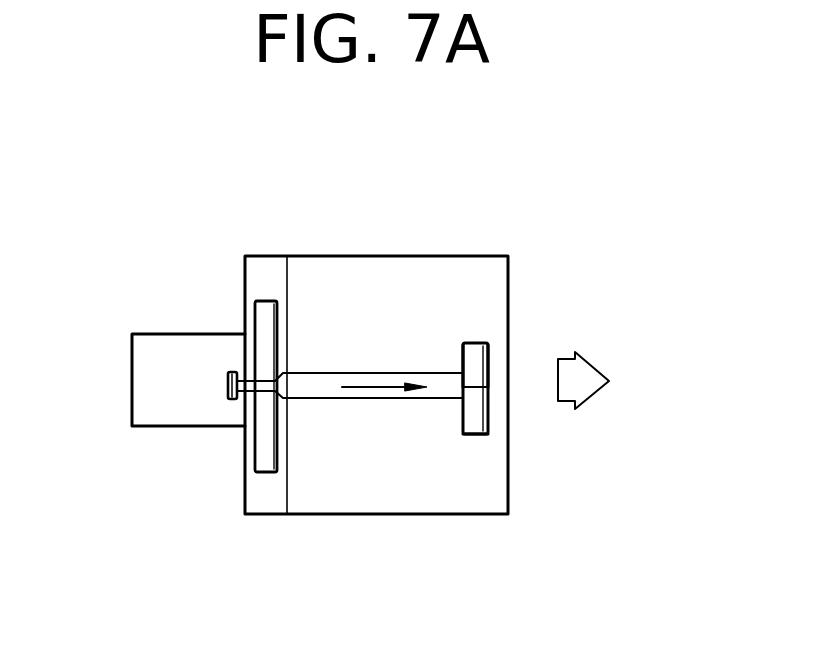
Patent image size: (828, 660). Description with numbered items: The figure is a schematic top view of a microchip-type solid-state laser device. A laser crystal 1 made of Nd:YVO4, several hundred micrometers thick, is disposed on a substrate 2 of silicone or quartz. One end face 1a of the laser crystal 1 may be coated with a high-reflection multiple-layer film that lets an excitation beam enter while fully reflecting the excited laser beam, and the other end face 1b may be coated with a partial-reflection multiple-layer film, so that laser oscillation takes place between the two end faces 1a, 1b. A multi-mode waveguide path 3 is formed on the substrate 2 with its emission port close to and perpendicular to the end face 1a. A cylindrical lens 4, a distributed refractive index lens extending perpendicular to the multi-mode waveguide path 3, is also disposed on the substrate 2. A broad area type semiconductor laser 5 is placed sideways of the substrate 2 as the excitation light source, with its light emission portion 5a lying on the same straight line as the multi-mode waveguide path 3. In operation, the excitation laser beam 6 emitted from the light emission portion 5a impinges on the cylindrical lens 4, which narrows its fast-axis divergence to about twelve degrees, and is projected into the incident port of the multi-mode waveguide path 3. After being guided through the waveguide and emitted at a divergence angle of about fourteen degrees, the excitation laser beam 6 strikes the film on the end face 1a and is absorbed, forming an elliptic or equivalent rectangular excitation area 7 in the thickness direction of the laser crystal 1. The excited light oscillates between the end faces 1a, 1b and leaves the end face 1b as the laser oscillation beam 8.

The laser crystal 1 is at (477, 352).
The end face of laser crystal 1a is at (461, 358).
The other end face of laser crystal 1b is at (490, 362).
The substrate 2 is at (490, 312).
The multi-mode waveguide path 3 is at (448, 388).
The cylindrical lens 4 is at (267, 463).
The semiconductor laser 5 is at (140, 365).
The light emission portion 5a is at (231, 370).
The excitation laser beam 6 is at (368, 385).
The excitation area 7 is at (477, 388).
The laser oscillation beam 8 is at (582, 393).